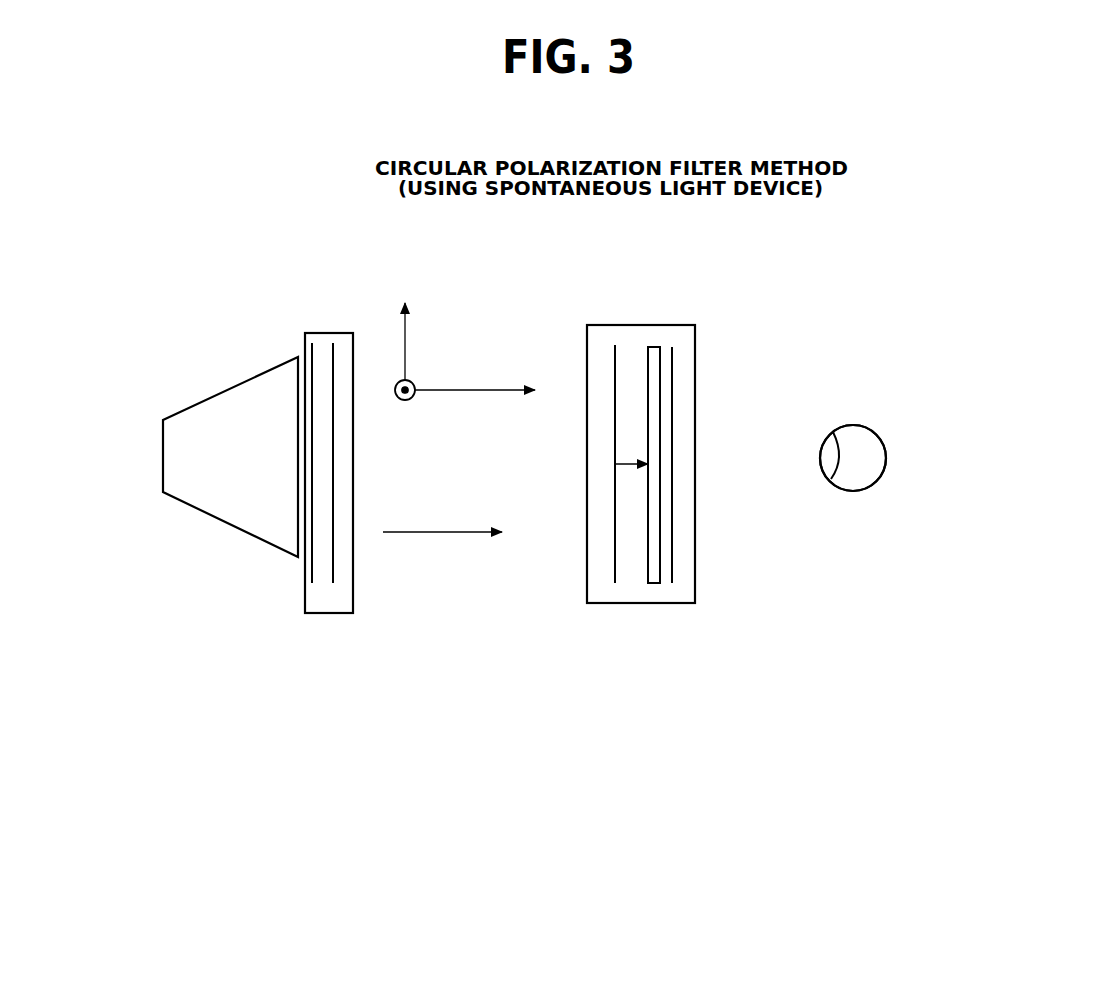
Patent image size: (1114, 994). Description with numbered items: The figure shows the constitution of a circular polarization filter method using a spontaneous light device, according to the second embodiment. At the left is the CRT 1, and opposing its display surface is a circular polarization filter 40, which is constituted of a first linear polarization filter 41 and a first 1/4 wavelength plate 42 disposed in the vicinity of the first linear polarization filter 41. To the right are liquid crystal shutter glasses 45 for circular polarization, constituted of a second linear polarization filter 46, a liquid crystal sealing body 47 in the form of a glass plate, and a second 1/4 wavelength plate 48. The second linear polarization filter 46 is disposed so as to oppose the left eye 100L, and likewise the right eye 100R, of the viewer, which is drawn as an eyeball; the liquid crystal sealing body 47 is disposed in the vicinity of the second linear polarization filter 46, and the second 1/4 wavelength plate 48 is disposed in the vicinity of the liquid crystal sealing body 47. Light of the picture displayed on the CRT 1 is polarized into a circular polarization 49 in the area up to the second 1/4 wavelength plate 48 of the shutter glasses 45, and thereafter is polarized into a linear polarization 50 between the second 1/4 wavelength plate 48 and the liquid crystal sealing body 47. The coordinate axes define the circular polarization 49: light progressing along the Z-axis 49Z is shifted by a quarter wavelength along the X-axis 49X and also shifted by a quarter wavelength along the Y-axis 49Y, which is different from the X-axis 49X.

The CRT 1 is at (172, 418).
The circular polarization filter 40 is at (304, 322).
The first linear polarization filter 41 is at (313, 590).
The first 1/4 wavelength plate 42 is at (335, 592).
The liquid crystal shutter glasses 45 is at (720, 378).
The second linear polarization filter 46 is at (676, 596).
The liquid crystal sealing body 47 is at (640, 592).
The second 1/4 wavelength plate 48 is at (610, 592).
The circular polarization 49 is at (455, 503).
The X-axis 49X is at (440, 408).
The Y-axis 49Y is at (481, 336).
The Z-axis 49Z is at (493, 374).
The linear polarization 50 is at (630, 452).
The left eye 100L is at (900, 395).
The right eye 100R is at (902, 428).